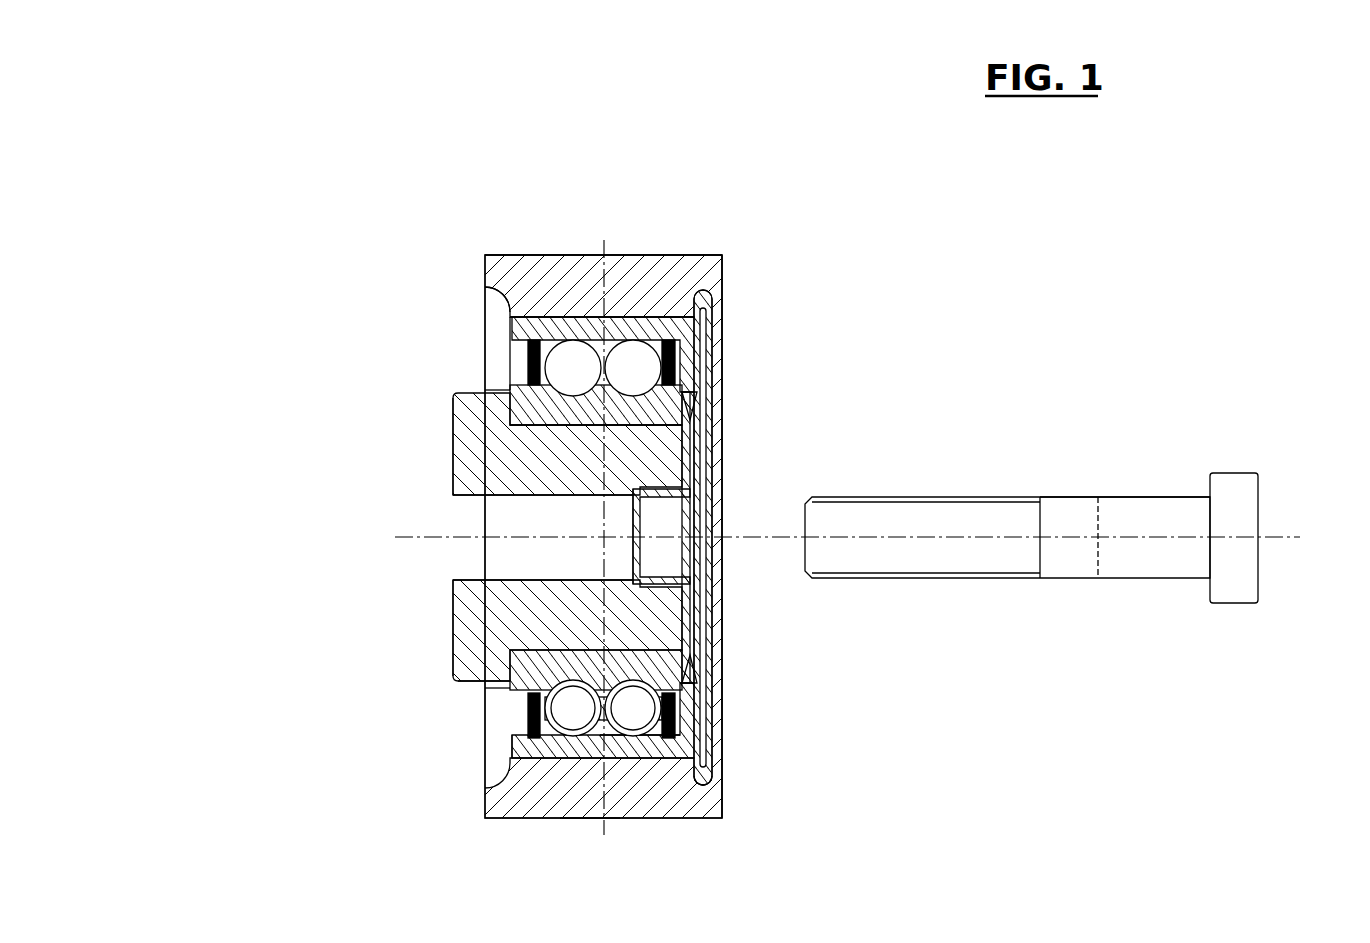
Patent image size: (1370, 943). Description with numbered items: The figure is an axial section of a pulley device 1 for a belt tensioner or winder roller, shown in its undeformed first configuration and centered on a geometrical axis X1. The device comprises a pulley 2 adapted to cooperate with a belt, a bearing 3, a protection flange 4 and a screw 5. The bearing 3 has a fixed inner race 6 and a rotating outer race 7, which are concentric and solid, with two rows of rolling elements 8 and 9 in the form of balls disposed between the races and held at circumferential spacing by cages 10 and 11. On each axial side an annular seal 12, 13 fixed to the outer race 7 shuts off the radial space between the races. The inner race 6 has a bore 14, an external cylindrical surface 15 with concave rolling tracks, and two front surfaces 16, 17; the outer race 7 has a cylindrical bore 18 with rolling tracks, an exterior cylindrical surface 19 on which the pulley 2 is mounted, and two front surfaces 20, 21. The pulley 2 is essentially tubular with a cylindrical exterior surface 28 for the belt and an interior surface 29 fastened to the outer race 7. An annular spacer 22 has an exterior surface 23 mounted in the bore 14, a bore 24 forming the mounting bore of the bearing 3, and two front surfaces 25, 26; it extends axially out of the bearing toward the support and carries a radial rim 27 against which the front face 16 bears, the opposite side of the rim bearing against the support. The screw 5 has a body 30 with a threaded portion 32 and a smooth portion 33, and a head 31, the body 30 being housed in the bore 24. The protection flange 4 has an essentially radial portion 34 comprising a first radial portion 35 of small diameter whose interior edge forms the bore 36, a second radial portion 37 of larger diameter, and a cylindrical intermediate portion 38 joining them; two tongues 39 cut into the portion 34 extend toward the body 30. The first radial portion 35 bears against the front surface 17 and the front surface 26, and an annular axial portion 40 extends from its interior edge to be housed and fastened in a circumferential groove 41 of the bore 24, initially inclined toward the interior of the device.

The pulley device 1 is at (304, 338).
The pulley 2 is at (508, 246).
The bearing 3 is at (490, 343).
The protection flange 4 is at (716, 756).
The screw 5 is at (1174, 476).
The inner race 6 is at (540, 430).
The outer race 7 is at (577, 760).
The first row of rolling elements 8 is at (565, 382).
The second row of rolling elements 9 is at (625, 382).
The cage 10 is at (535, 765).
The cage 11 is at (640, 760).
The annular seal 12 is at (530, 736).
The annular seal 13 is at (690, 757).
The bore 14 is at (542, 444).
The external cylindrical surface 15 is at (510, 718).
The front surface 16 is at (505, 690).
The front surface 17 is at (695, 690).
The cylindrical bore 18 is at (510, 368).
The exterior cylindrical surface 19 is at (558, 318).
The front surface 20 is at (507, 329).
The front surface 21 is at (718, 317).
The spacer 22 is at (445, 632).
The exterior surface 23 is at (483, 677).
The bore 24 is at (497, 522).
The front surface 25 is at (452, 596).
The front surface 26 is at (705, 655).
The radial rim 27 is at (460, 478).
The cylindrical exterior surface 28 is at (585, 820).
The interior surface 29 is at (672, 338).
The body 30 is at (1020, 497).
The head 31 is at (1232, 603).
The threaded portion 32 is at (945, 578).
The smooth portion 33 is at (1068, 578).
The essentially radial portion 34 is at (828, 278).
The first radial portion 35 is at (700, 433).
The bore 36 is at (692, 572).
The second radial portion 37 is at (706, 335).
The cylindrical intermediate portion 38 is at (712, 405).
The tongues 39 is at (692, 485).
The axial portion 40 is at (665, 523).
The circumferential groove 41 is at (665, 560).
The geometrical axis X1 is at (846, 537).